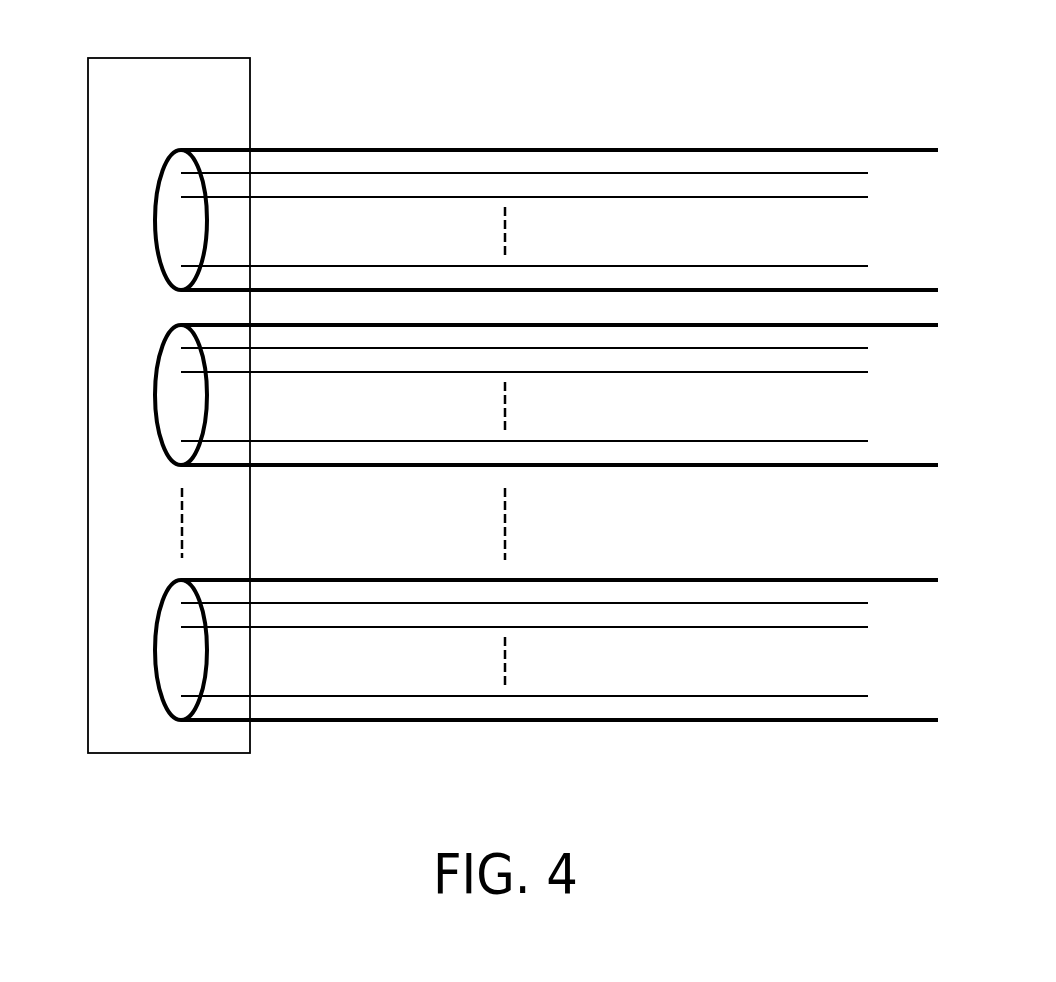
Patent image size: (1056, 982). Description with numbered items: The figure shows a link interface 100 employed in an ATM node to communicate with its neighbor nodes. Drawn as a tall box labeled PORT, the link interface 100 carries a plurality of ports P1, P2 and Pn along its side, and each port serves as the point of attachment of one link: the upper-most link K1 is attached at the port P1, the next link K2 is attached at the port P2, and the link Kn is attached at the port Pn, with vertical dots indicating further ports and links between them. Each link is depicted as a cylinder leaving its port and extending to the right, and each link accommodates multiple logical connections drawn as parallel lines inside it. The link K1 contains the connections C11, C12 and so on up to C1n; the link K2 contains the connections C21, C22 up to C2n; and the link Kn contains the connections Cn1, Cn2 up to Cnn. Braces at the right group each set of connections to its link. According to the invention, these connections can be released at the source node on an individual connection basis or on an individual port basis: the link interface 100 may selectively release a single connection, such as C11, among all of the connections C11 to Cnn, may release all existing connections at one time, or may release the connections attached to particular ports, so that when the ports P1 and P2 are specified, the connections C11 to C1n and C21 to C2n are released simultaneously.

The link interface 100 is at (160, 58).
The port P1 is at (157, 210).
The port P2 is at (157, 395).
The port Pn is at (157, 628).
The link K1 is at (570, 216).
The link K2 is at (571, 392).
The link Kn is at (572, 649).
The connection C11 is at (555, 173).
The connection C12 is at (555, 208).
The connection C1n is at (555, 267).
The connection C21 is at (555, 348).
The connection C22 is at (555, 384).
The connection C2n is at (555, 442).
The connection Cn1 is at (555, 605).
The connection Cn2 is at (555, 640).
The connection Cnn is at (555, 697).